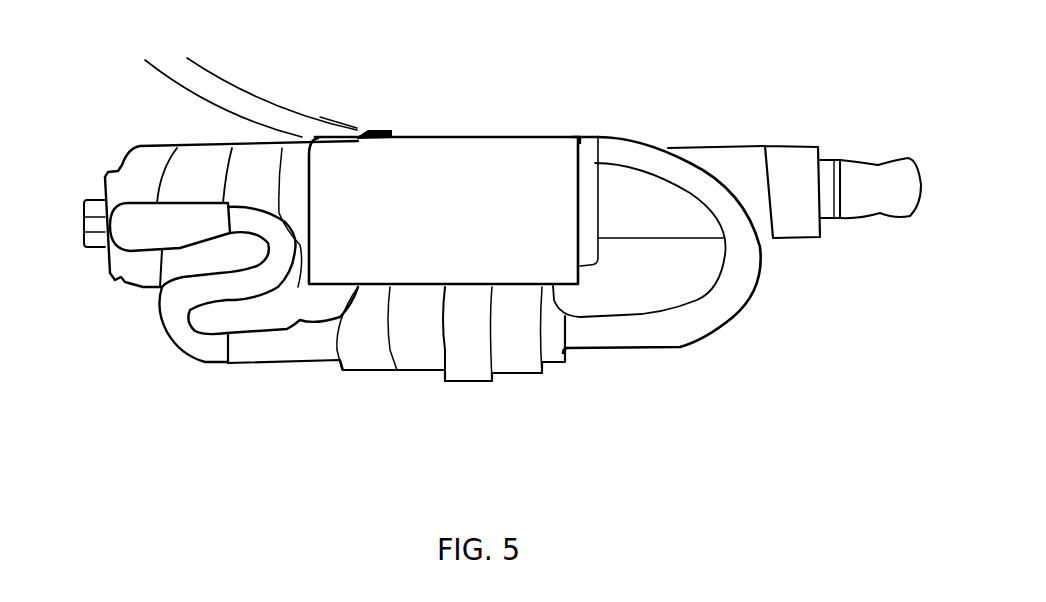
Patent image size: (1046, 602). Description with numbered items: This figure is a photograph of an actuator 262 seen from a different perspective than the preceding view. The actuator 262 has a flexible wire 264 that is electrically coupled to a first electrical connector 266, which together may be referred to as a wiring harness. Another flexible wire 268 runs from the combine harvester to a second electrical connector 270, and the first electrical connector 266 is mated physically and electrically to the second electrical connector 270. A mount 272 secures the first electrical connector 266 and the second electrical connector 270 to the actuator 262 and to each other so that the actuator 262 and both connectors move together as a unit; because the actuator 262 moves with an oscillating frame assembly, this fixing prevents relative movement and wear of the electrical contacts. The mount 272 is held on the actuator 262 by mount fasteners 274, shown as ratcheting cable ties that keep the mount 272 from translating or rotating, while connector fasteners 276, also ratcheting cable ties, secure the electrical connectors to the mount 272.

The actuator 262 is at (135, 268).
The flexible wire 264 is at (188, 340).
The first electrical connector 266 is at (358, 348).
The flexible wire 268 is at (713, 308).
The second electrical connector 270 is at (557, 340).
The mount 272 is at (450, 147).
The mount fasteners 274 is at (357, 137).
The connector fasteners 276 is at (413, 335).